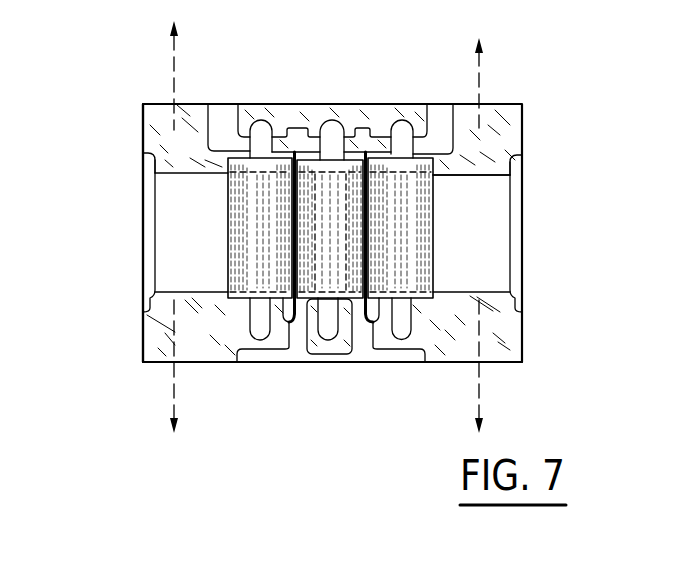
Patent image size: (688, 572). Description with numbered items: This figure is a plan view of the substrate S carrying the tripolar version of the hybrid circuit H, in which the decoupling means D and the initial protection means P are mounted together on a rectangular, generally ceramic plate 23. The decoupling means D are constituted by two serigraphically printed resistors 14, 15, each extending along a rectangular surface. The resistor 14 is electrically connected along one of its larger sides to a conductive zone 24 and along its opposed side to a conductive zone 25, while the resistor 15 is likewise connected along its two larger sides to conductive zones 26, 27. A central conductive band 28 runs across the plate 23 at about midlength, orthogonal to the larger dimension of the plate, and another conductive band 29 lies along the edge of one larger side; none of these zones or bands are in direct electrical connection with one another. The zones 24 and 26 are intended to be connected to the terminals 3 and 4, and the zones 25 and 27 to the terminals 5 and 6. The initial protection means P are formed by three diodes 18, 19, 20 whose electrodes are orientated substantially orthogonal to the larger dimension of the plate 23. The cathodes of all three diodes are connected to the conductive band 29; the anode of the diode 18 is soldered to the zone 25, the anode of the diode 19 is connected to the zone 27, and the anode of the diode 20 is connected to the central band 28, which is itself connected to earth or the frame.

The terminal 3 is at (165, 69).
The terminal 4 is at (472, 73).
The terminal 5 is at (165, 367).
The terminal 6 is at (485, 369).
The plate 23 is at (139, 125).
The conductive zone 24 is at (183, 120).
The conductive zone 26 is at (495, 137).
The conductive zone 25 is at (158, 335).
The conductive zone 27 is at (495, 333).
The central conductive band 28 is at (313, 346).
The conductive band 29 is at (342, 110).
The diode 18 is at (250, 215).
The diode 20 is at (322, 188).
The diode 19 is at (410, 198).
The resistor 14 is at (180, 270).
The resistor 15 is at (485, 263).
The hybrid circuit H is at (126, 240).
The initial protection means P is at (358, 150).
The decoupling means D is at (472, 190).
The substrate S is at (283, 372).